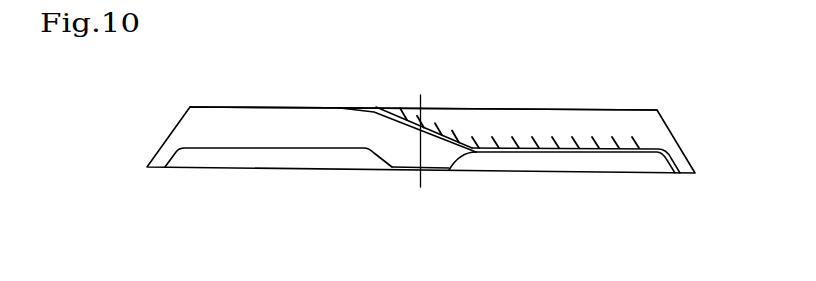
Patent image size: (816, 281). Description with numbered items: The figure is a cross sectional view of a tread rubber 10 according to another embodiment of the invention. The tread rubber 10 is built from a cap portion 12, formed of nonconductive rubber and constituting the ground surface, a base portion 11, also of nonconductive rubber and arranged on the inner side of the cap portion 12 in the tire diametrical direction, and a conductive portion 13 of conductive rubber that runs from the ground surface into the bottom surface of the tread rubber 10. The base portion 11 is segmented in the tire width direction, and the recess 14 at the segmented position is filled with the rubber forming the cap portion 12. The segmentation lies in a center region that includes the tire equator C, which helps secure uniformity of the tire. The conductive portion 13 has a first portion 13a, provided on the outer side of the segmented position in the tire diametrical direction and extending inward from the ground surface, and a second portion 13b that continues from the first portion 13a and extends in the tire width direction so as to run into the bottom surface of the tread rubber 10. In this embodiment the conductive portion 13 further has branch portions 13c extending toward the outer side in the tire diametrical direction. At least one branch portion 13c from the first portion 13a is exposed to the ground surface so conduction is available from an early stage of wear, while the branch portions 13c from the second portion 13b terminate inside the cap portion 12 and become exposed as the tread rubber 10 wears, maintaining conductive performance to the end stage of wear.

The tread rubber 10 is at (226, 106).
The base portion 11 is at (226, 160).
The cap portion 12 is at (303, 122).
The conductive portion 13 is at (527, 151).
The first portion 13a is at (436, 138).
The second portion 13b is at (555, 153).
The branch portion 13c is at (437, 127).
The recess 14 is at (407, 162).
The tire equator C is at (422, 124).